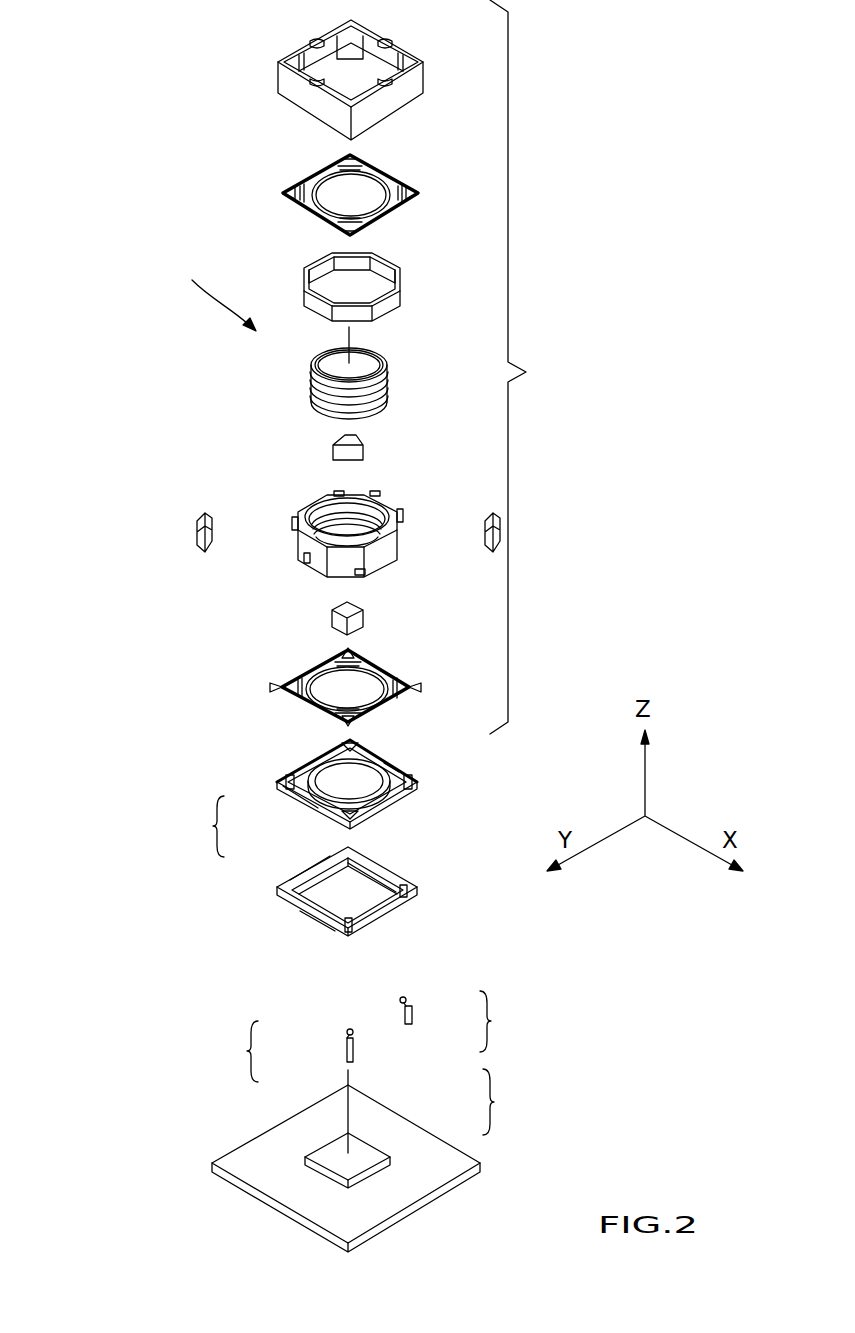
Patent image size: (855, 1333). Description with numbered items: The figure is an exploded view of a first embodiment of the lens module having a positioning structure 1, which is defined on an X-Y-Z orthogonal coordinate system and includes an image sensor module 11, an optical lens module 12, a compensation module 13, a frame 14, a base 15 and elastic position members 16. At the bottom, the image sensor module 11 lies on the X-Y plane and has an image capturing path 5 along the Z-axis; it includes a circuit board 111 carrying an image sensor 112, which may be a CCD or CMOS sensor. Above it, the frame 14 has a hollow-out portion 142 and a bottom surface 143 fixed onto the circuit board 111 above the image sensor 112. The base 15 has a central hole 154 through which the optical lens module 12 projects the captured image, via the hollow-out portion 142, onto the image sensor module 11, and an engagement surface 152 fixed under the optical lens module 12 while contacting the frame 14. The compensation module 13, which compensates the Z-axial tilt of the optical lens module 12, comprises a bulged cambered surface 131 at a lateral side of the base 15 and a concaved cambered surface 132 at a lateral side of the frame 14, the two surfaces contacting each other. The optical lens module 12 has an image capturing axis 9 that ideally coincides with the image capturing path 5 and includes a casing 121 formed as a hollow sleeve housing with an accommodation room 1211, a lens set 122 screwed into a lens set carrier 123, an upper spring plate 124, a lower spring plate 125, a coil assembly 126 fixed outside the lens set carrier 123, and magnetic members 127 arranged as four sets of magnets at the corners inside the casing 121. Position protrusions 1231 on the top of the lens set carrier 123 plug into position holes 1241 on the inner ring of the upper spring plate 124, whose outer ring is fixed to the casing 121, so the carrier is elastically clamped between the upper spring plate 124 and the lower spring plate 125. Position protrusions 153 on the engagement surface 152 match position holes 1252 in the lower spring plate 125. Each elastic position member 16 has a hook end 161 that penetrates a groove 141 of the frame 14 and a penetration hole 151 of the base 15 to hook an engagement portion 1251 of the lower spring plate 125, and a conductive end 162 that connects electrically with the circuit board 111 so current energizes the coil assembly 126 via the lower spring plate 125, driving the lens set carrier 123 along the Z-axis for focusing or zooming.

The lens module having a positioning structure 1 is at (217, 295).
The image capturing path 5 is at (349, 1081).
The image capturing axis 9 is at (350, 340).
The image sensor module 11 is at (500, 1102).
The circuit board 111 is at (412, 1143).
The image sensor 112 is at (357, 1142).
The optical lens module 12 is at (523, 367).
The casing 121 is at (410, 97).
The accommodation room 1211 is at (387, 58).
The lens set 122 is at (389, 378).
The lens set carrier 123 is at (372, 496).
The position protrusions 1231 is at (372, 549).
The upper spring plate 124 is at (406, 193).
The position holes 1241 is at (380, 214).
The lower spring plate 125 is at (403, 692).
The engagement portion 1251 is at (354, 722).
The position holes 1252 is at (344, 658).
The coil assembly 126 is at (403, 284).
The magnetic member 127 is at (361, 448).
The compensation module 13 is at (203, 826).
The bulged cambered surface 131 is at (303, 814).
The concaved cambered surface 132 is at (313, 872).
The frame 14 is at (278, 891).
The groove 141 is at (410, 893).
The hollow-out portion 142 is at (367, 888).
The bottom surface 143 is at (323, 925).
The base 15 is at (308, 792).
The penetration hole 151 is at (355, 819).
The engagement surface 152 is at (393, 773).
The position protrusions 153 is at (291, 778).
The central hole 154 is at (360, 778).
The elastic position member 16 is at (371, 1036).
The hook end 161 is at (409, 1002).
The conductive end 162 is at (409, 1023).